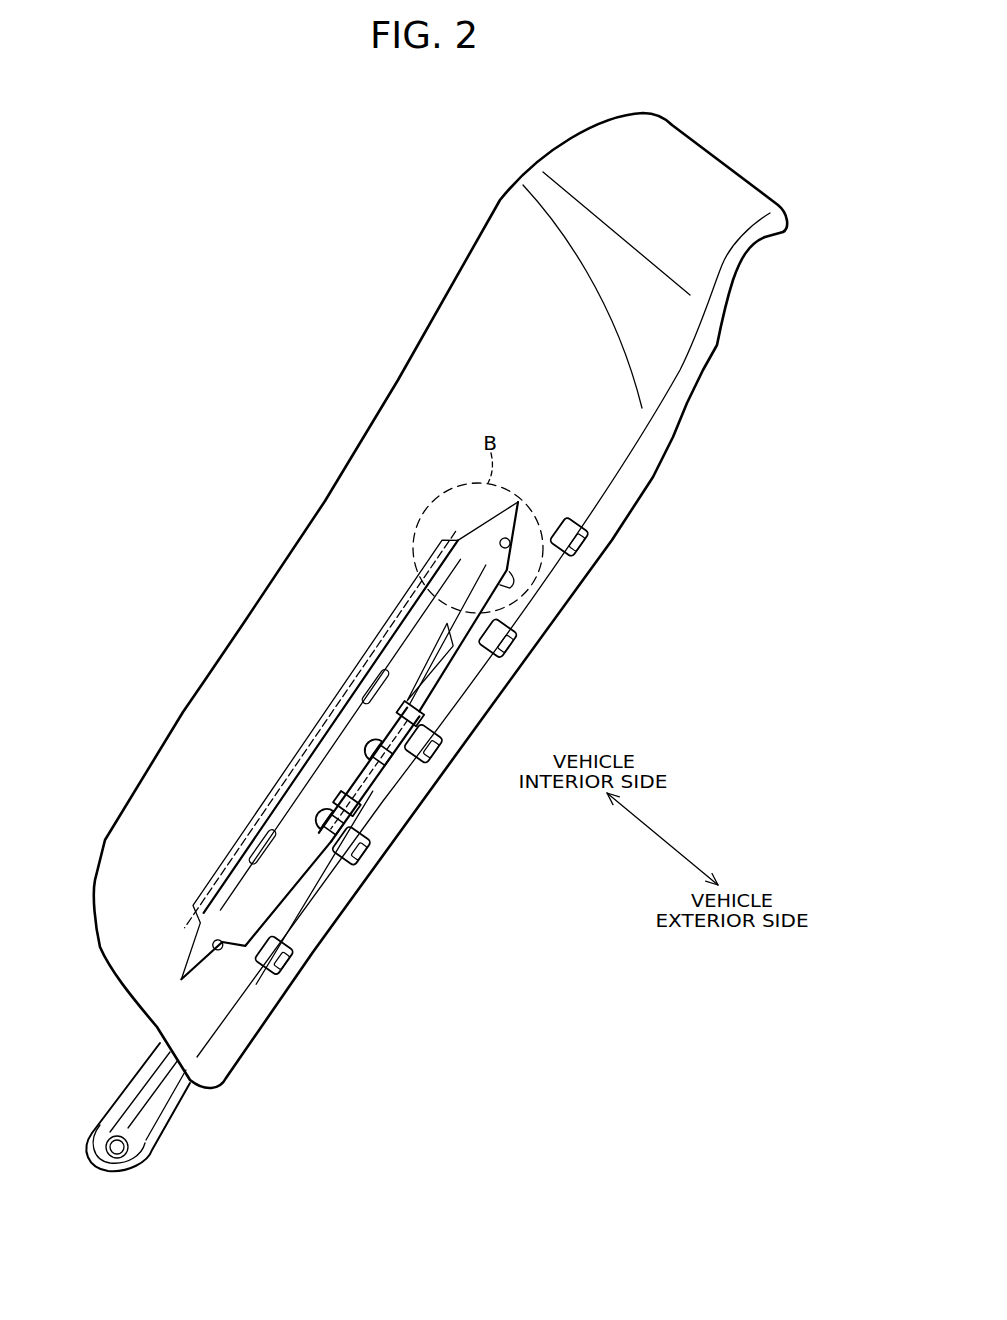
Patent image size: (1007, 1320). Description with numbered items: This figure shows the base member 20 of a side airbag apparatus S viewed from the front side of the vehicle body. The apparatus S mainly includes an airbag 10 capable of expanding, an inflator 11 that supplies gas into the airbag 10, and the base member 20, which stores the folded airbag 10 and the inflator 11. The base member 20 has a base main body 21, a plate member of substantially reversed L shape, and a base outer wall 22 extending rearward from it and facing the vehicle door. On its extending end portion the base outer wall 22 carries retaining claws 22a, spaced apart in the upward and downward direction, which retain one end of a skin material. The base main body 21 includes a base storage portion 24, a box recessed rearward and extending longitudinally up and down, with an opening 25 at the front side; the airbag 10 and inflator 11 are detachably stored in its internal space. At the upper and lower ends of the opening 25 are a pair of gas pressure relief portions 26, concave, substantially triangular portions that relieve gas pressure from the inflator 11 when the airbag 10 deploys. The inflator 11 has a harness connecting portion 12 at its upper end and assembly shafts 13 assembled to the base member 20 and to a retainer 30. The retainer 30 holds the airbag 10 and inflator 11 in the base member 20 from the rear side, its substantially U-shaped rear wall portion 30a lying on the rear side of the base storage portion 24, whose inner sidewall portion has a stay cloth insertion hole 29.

The side airbag apparatus S is at (166, 162).
The base member 20 is at (458, 360).
The base main body 21 is at (428, 398).
The base outer wall 22 is at (617, 512).
The retaining claws 22a is at (440, 750).
The airbag 10 is at (392, 622).
The inflator 11 is at (340, 766).
The harness connecting portion 12 is at (385, 730).
The assembly shafts 13 is at (367, 742).
The base storage portion 24 is at (290, 847).
The opening 25 is at (510, 583).
The gas pressure relief portions 26 is at (510, 540).
The stay cloth insertion hole 29 is at (373, 672).
The retainer 30 is at (201, 1107).
The rear wall portion 30a is at (177, 1120).